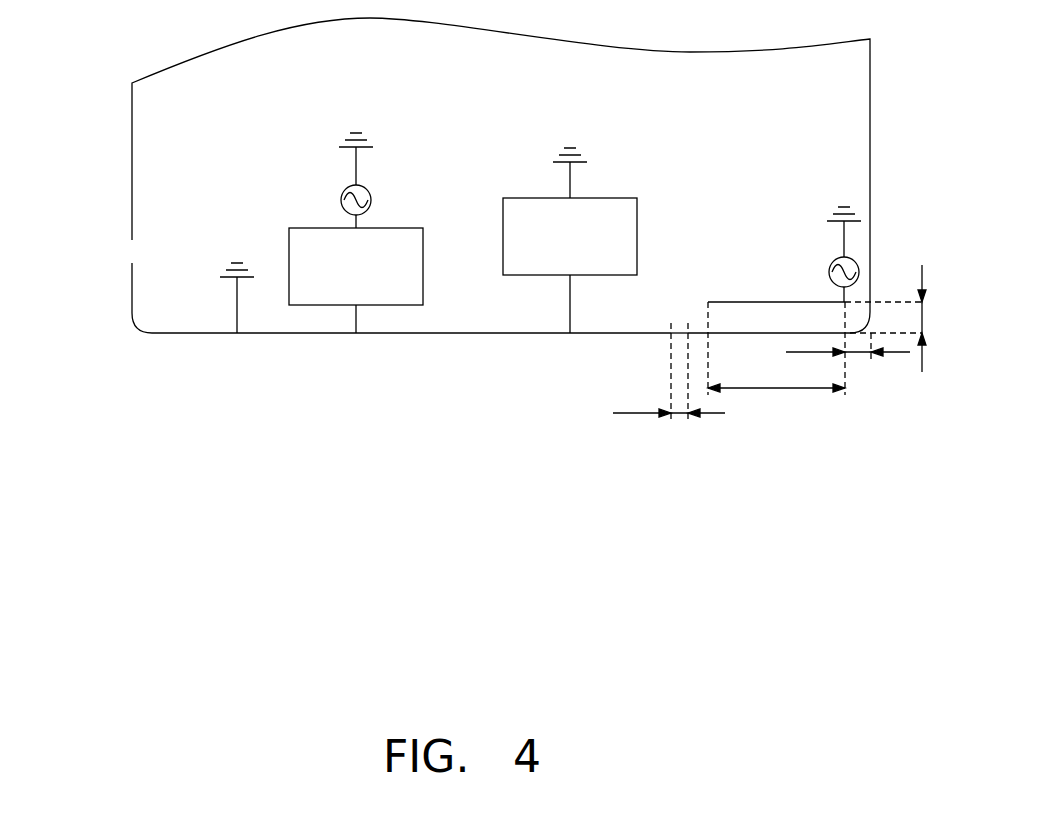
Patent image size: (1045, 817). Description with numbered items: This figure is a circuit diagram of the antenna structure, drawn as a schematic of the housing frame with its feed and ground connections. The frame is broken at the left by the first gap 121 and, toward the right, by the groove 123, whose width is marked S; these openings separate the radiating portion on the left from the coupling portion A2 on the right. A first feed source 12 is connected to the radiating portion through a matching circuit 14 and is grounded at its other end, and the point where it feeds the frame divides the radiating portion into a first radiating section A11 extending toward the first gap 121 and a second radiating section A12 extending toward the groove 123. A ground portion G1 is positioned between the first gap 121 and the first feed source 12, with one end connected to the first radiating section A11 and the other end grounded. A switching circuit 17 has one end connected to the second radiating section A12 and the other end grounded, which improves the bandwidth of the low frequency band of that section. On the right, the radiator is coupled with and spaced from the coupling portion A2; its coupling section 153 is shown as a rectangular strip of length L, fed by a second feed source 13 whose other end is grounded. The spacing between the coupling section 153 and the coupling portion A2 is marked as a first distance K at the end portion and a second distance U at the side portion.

The first feed source 12 is at (342, 201).
The first gap 121 is at (133, 253).
The ground portion G1 is at (237, 312).
The matching circuit 14 is at (382, 305).
The first radiating section A11 is at (293, 333).
The second radiating section A12 is at (458, 333).
The switching circuit 17 is at (532, 275).
The groove 123 is at (680, 333).
The coupling section 153 is at (772, 302).
The second feed source 13 is at (855, 262).
The coupling portion A2 is at (866, 334).
The first distance K is at (932, 318).
The length of the coupling section L is at (776, 401).
The second distance U is at (848, 364).
The width of the groove S is at (669, 426).